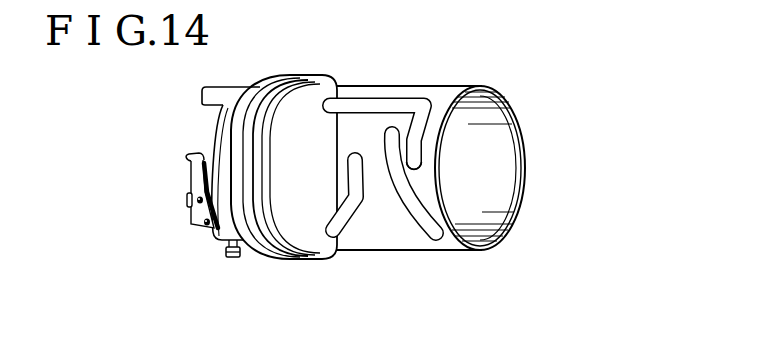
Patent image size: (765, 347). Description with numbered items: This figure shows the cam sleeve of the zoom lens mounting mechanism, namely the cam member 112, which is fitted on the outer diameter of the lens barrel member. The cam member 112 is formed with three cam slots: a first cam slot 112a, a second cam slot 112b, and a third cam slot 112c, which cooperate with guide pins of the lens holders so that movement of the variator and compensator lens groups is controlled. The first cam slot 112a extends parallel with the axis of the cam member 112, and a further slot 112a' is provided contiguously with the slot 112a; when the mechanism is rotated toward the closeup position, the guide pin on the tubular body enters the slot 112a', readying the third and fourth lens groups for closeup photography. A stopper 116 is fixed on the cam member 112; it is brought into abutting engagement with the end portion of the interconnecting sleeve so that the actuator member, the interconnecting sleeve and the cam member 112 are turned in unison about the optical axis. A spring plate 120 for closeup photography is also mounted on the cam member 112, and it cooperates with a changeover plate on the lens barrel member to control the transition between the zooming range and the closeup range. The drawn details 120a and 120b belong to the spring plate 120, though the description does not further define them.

The cam member 112 is at (447, 98).
The first cam slot 112a is at (377, 100).
The slot 112a' is at (493, 165).
The second cam slot 112b is at (340, 230).
The third cam slot 112c is at (437, 236).
The stopper 116 is at (233, 258).
The spring plate 120 is at (193, 183).
The rivets of spring clip 120a is at (203, 226).
The hook end of spring clip 120b is at (188, 161).